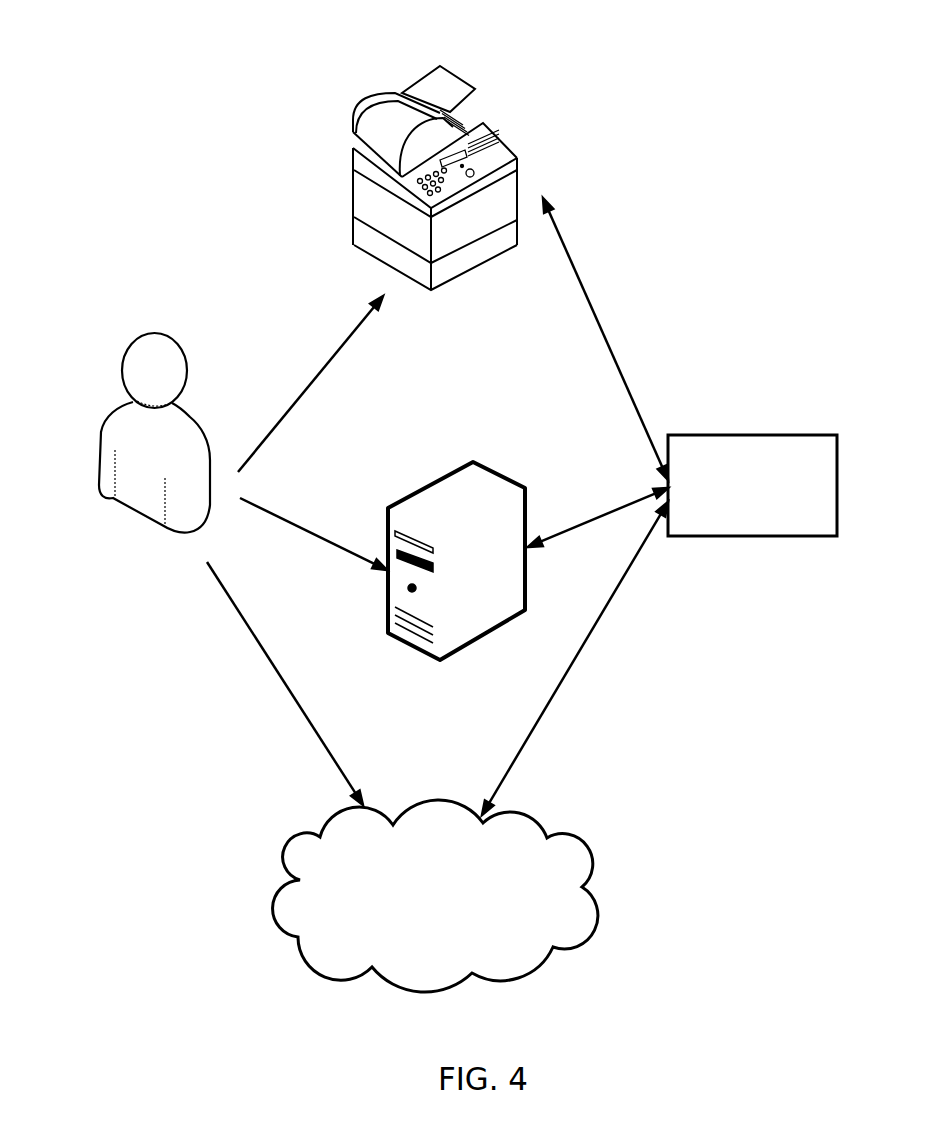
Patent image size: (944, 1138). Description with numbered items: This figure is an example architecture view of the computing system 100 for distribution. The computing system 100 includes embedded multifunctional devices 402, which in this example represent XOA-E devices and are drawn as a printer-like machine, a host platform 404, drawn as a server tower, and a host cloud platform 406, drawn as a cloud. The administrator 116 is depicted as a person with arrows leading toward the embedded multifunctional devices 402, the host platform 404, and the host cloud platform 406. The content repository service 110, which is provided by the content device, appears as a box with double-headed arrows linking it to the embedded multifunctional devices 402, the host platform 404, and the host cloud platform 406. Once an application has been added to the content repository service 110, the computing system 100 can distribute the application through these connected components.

The computing system 100 is at (222, 44).
The administrator 116 is at (148, 423).
The embedded multifunctional devices 402 is at (497, 190).
The host platform 404 is at (492, 510).
The content repository service 110 is at (734, 496).
The host cloud platform 406 is at (523, 898).